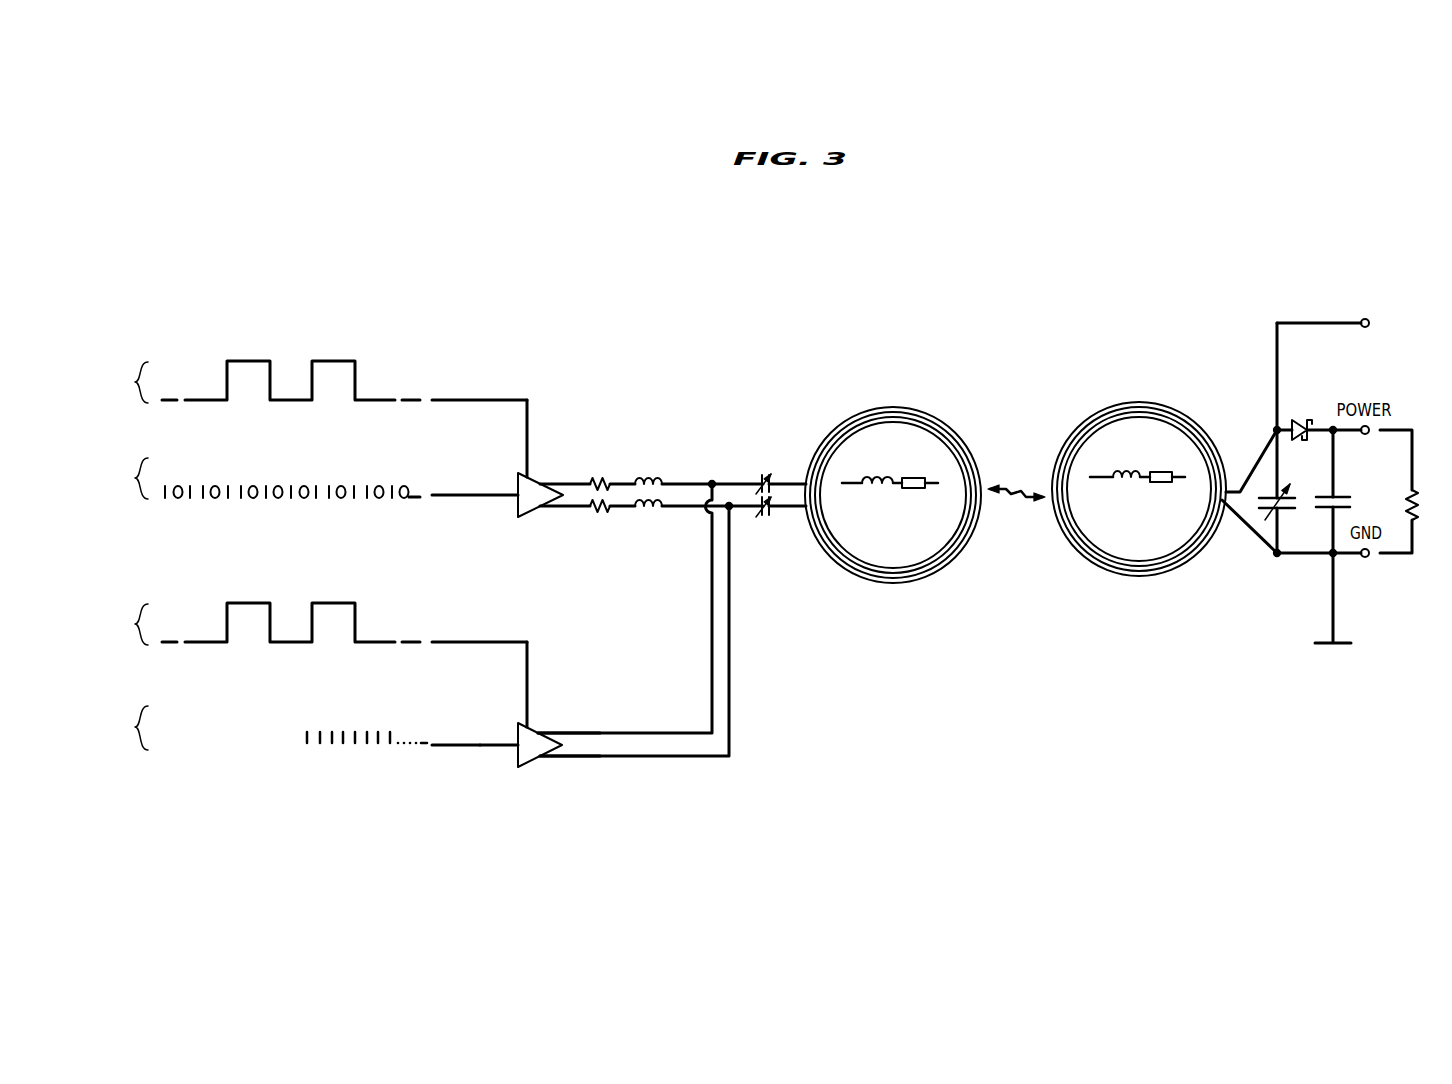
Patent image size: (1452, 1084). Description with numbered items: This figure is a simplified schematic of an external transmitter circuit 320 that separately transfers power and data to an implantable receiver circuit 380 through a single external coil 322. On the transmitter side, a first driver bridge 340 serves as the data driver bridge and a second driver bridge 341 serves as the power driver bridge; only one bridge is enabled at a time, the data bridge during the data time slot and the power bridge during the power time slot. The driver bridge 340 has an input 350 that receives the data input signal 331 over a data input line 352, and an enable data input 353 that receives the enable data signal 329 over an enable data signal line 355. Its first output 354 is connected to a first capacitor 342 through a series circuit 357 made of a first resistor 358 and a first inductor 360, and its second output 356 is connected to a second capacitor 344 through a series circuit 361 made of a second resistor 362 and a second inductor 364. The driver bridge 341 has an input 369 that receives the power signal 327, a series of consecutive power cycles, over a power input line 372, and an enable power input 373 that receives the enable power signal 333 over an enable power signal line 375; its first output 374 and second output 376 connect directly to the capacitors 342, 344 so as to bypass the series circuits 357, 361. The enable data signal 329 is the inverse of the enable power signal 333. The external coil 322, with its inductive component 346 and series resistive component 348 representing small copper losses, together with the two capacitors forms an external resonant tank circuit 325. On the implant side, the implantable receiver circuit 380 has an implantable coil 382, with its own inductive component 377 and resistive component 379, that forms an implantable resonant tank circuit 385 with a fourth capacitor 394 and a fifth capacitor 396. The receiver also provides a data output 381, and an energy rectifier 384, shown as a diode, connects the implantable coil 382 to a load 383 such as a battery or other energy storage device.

The external transmitter circuit 320 is at (640, 300).
The external resonant tank circuit 325 is at (800, 330).
The implantable receiver circuit 380 is at (1180, 295).
The implantable resonant tank circuit 385 is at (1247, 368).
The enable data signal 329 is at (256, 382).
The data input signal 331 is at (256, 478).
The enable power signal 333 is at (256, 624).
The power signal 327 is at (260, 728).
The enable data signal line 355 is at (520, 397).
The enable data input 353 is at (533, 475).
The input 350 is at (516, 473).
The data input line 352 is at (472, 498).
The first driver bridge 340 is at (527, 518).
The first output 354 is at (541, 483).
The second output 356 is at (541, 508).
The resistor 358 is at (603, 478).
The resistor 362 is at (603, 512).
The inductor 360 is at (651, 478).
The inductor 364 is at (647, 512).
The series circuit 357 is at (680, 445).
The series circuit 361 is at (680, 535).
The capacitor 342 is at (765, 474).
The capacitor 344 is at (766, 517).
The external coil 322 is at (895, 584).
The inductive component 346 is at (870, 473).
The series resistive component 348 is at (915, 477).
The implantable coil 382 is at (1140, 577).
The inductive component 377 is at (1118, 469).
The series resistive component 379 is at (1160, 471).
The data output 381 is at (1370, 324).
The energy rectifier 384 is at (1297, 417).
The capacitor 396 is at (1349, 497).
The capacitor 394 is at (1291, 512).
The load 383 is at (1432, 514).
The enable power signal line 375 is at (450, 645).
The enable power input 373 is at (533, 727).
The power input line 372 is at (441, 750).
The input 369 is at (517, 752).
The second driver bridge 341 is at (527, 768).
The first output 374 is at (540, 733).
The second output 376 is at (541, 758).